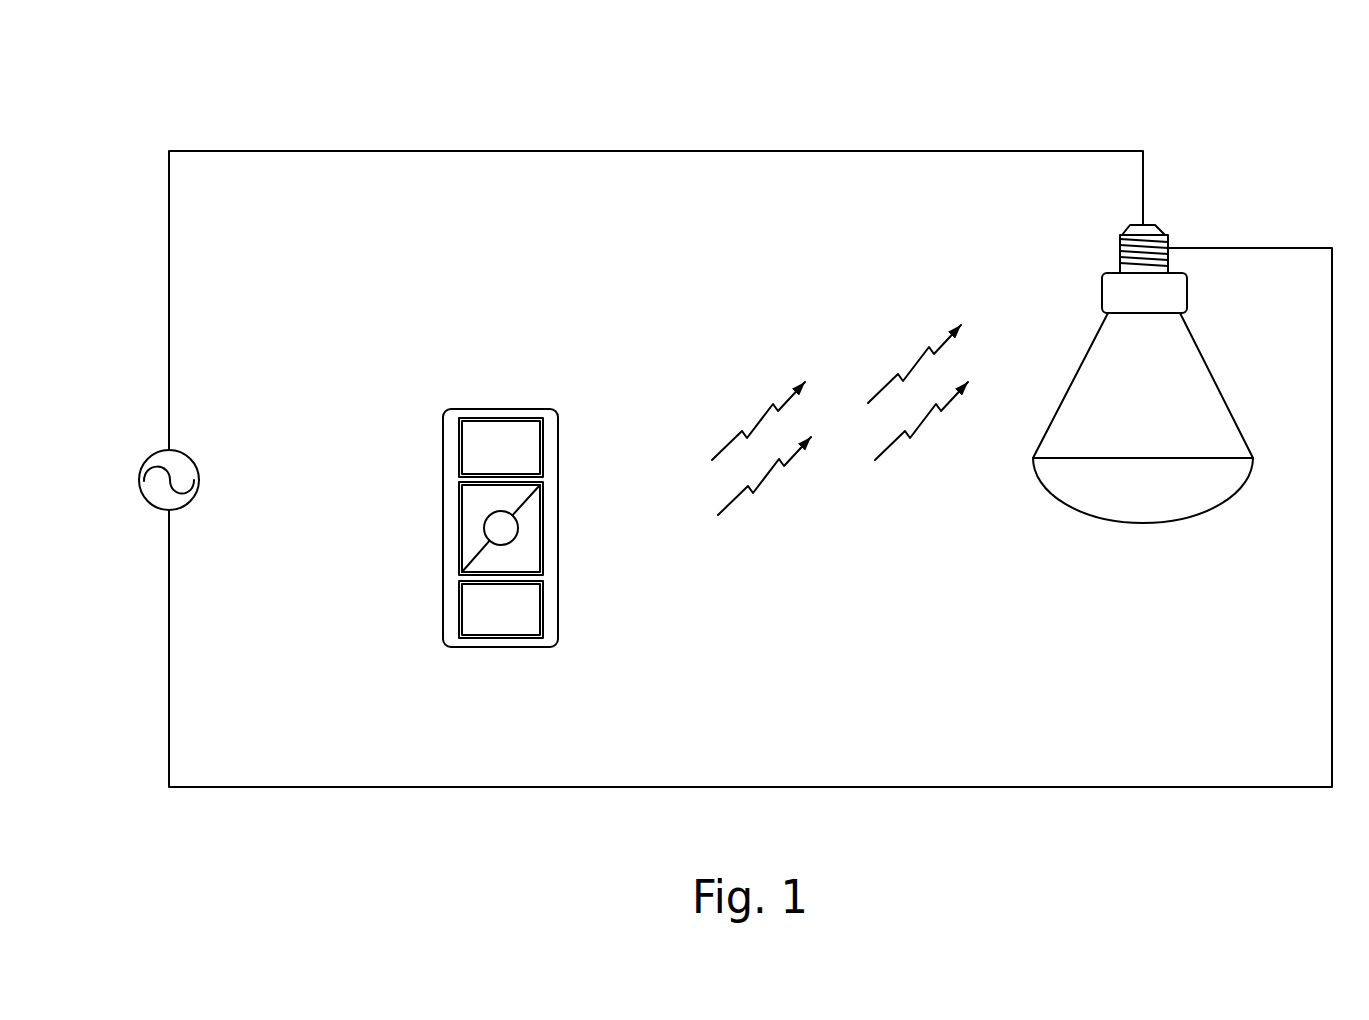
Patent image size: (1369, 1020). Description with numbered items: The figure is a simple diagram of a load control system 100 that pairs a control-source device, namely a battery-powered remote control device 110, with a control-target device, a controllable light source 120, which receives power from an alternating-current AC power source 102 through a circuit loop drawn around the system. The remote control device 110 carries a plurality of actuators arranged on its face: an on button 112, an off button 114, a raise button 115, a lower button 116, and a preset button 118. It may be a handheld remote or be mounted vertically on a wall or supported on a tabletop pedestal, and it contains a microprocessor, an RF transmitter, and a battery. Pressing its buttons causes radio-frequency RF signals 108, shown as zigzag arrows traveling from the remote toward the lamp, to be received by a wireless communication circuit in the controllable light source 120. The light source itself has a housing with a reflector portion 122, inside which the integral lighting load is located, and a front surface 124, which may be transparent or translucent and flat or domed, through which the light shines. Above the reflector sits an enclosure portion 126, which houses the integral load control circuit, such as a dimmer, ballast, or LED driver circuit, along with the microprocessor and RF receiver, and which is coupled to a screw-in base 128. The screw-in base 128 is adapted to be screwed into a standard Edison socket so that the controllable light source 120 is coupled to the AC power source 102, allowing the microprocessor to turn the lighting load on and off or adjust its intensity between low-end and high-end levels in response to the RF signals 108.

The load control system 100 is at (572, 93).
The AC power source 102 is at (191, 453).
The RF signals 108 is at (740, 342).
The remote control device 110 is at (511, 444).
The on button 112 is at (505, 432).
The off button 114 is at (513, 612).
The raise button 115 is at (478, 503).
The lower button 116 is at (513, 550).
The preset button 118 is at (503, 528).
The controllable light source 120 is at (1121, 422).
The reflector portion 122 is at (1190, 375).
The front surface 124 is at (1145, 487).
The enclosure portion 126 is at (1127, 297).
The screw-in base 128 is at (1167, 240).